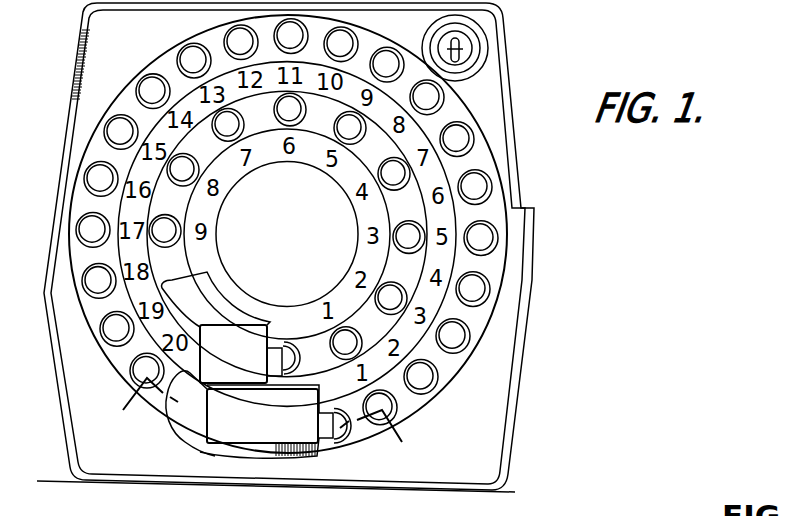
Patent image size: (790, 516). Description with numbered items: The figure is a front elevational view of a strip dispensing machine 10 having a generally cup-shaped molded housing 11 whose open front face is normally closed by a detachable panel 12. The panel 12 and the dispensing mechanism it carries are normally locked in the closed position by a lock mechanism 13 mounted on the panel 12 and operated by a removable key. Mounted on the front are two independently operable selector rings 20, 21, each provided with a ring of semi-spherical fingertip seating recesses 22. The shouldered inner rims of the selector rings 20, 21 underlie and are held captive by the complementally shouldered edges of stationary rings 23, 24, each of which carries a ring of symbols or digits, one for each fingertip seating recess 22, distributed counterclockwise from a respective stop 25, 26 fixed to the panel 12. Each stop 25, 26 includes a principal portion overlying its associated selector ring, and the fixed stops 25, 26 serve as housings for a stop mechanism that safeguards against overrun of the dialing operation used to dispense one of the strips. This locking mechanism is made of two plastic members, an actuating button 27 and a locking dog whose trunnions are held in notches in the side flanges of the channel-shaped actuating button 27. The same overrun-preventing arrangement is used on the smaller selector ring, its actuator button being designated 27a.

The strip dispensing machine 10 is at (548, 207).
The housing 11 is at (549, 369).
The detachable panel 12 is at (507, 425).
The lock mechanism 13 is at (477, 38).
The selector ring 20 is at (418, 188).
The selector ring 21 is at (452, 103).
The fingertip seating recesses 22 is at (487, 287).
The stationary ring 23 is at (460, 218).
The stationary ring 24 is at (392, 276).
The stop 25 is at (242, 414).
The stop 26 is at (216, 327).
The actuating button 27 is at (326, 436).
The actuator button 27a is at (273, 350).